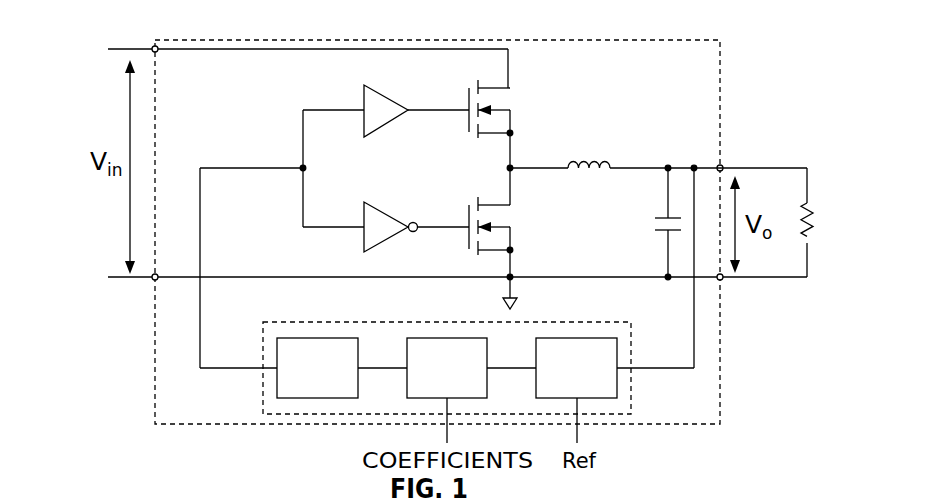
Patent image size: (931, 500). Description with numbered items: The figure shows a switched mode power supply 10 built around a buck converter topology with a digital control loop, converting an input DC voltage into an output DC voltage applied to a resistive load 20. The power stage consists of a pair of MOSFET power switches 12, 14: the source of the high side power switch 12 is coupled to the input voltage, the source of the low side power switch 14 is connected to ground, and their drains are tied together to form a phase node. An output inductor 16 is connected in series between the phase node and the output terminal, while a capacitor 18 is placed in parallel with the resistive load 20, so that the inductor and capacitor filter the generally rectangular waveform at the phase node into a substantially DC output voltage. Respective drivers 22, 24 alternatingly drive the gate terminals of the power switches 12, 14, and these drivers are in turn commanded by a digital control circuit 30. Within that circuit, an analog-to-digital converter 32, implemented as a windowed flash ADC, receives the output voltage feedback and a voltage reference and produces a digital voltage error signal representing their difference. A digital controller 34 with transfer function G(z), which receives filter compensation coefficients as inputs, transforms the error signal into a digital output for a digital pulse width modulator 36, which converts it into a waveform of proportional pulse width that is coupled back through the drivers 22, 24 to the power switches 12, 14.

The switched mode power supply 10 is at (104, 43).
The high side power switch 12 is at (512, 119).
The low side power switch 14 is at (512, 237).
The output inductor 16 is at (586, 160).
The capacitor 18 is at (656, 229).
The resistive load 20 is at (808, 210).
The driver 22 is at (364, 97).
The driver 24 is at (364, 238).
The digital control circuit 30 is at (481, 350).
The analog-to-digital converter 32 is at (577, 338).
The digital controller 34 is at (447, 338).
The digital pulse width modulator 36 is at (318, 338).